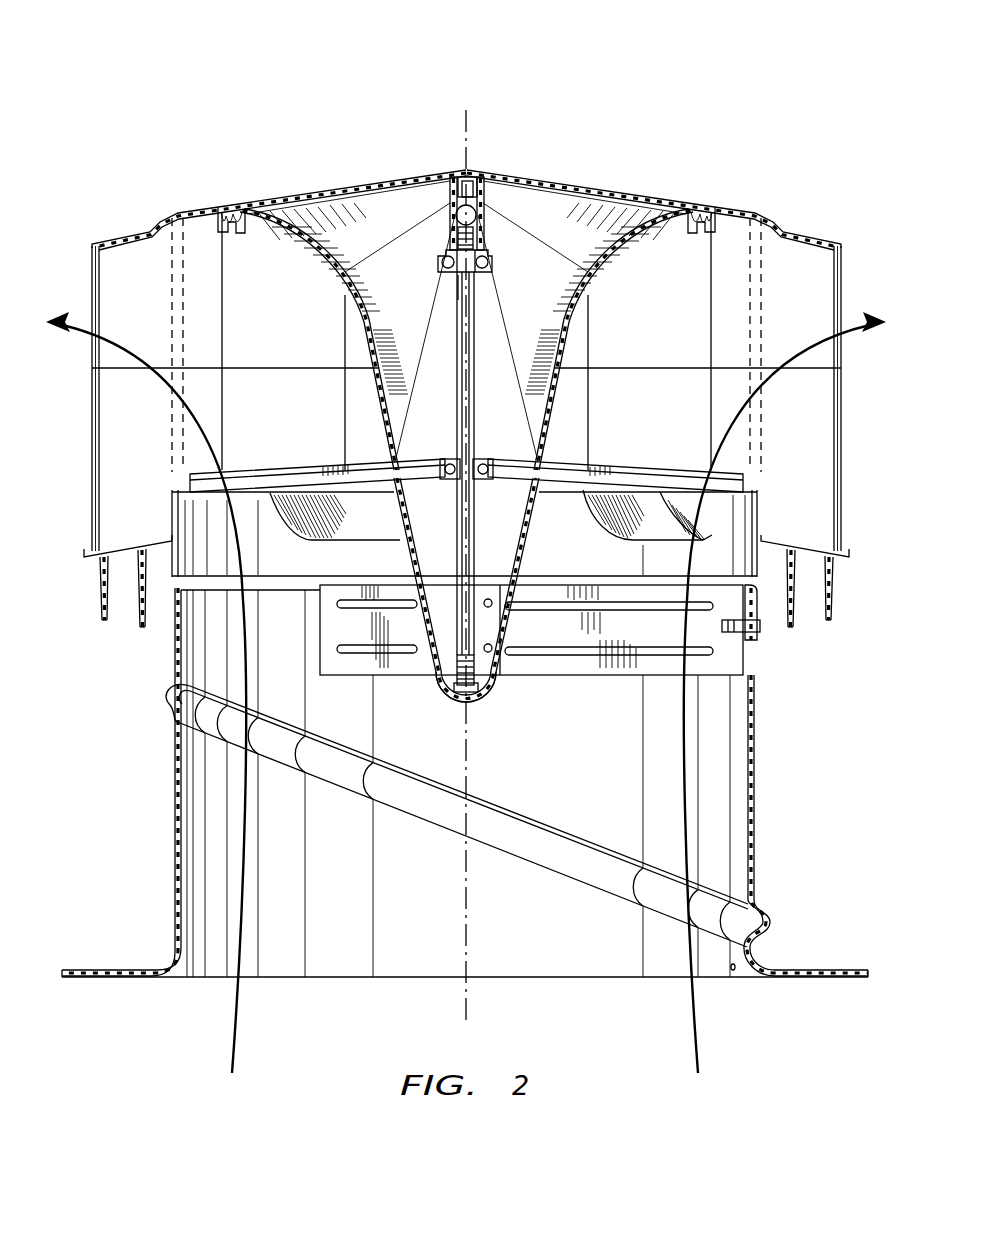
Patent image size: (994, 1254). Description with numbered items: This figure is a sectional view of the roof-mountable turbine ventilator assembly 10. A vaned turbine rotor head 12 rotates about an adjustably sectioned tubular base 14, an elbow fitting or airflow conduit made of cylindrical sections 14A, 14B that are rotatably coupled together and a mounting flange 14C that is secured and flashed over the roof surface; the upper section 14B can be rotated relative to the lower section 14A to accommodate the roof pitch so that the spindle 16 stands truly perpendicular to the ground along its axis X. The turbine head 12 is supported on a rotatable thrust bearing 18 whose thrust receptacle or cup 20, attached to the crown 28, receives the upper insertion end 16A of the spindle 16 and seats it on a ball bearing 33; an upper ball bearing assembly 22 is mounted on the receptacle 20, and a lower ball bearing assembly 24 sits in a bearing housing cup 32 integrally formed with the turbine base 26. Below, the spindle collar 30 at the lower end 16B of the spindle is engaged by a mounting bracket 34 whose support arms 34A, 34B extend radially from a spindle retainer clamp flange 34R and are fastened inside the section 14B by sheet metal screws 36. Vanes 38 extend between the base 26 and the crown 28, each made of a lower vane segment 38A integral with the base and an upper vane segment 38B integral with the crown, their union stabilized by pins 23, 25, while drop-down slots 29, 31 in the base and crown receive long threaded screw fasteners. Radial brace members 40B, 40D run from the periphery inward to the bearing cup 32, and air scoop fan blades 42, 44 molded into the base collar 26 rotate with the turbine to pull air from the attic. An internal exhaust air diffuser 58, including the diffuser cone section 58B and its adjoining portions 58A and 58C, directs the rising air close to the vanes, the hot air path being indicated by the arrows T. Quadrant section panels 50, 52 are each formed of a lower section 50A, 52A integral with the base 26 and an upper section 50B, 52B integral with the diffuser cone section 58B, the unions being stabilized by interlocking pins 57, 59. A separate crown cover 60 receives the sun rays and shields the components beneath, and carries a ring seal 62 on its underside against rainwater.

The turbine ventilator assembly 10 is at (781, 70).
The turbine rotor head 12 is at (449, 194).
The adjustable elbow fitting 14 is at (465, 782).
The lower cylindrical section 14A is at (172, 848).
The upper cylindrical section 14B is at (758, 838).
The mounting flange 14C is at (835, 968).
The spindle 16 is at (504, 478).
The upper insertion end of spindle 16A is at (472, 292).
The shaft lower end 16B is at (478, 640).
The thrust bearing 18 is at (466, 305).
The thrust receptacle 20 is at (485, 192).
The upper ball bearing assembly 22 is at (446, 272).
The pin 23 is at (170, 436).
The lower ball bearing assembly 24 is at (450, 456).
The pin 25 is at (170, 308).
The turbine base 26 is at (88, 584).
The crown 28 is at (180, 214).
The drop-down slots 29 is at (762, 436).
The spindle collar 30 is at (456, 560).
The drop-down slots 31 is at (760, 308).
The bearing housing cup 32 is at (486, 456).
The ball bearing 33 is at (456, 220).
The mounting bracket 34 is at (531, 669).
The support arm 34A is at (340, 685).
The support arm 34B is at (532, 682).
The spindle retainer clamp flange 34R is at (500, 572).
The sheet metal screws 36 is at (760, 632).
The vanes 38 is at (465, 398).
The lower vane segment 38A is at (92, 456).
The upper vane segment 38B is at (92, 292).
The radial brace member 40B is at (548, 488).
The radial brace member 40D is at (302, 468).
The air scoop fan blade 42 is at (335, 516).
The air scoop fan blade 44 is at (647, 515).
The quadrant section panel 50 is at (698, 341).
The lower quadrant panel section 50A is at (647, 418).
The upper quadrant panel section 50B is at (637, 318).
The quadrant section panel 52 is at (235, 341).
The lower quadrant panel section 52A is at (254, 407).
The upper quadrant panel section 52B is at (286, 327).
The interlocking pin 57 is at (588, 382).
The internal exhaust air diffuser 58 is at (493, 728).
The duct housing 58A is at (464, 613).
The diffuser cone section 58B is at (325, 265).
The funnel bottom 58C is at (450, 712).
The interlocking pin 59 is at (345, 382).
The crown cover 60 is at (588, 192).
The ring seal 62 is at (229, 210).
The axis X is at (469, 897).
The airflow arrows T is at (236, 1032).